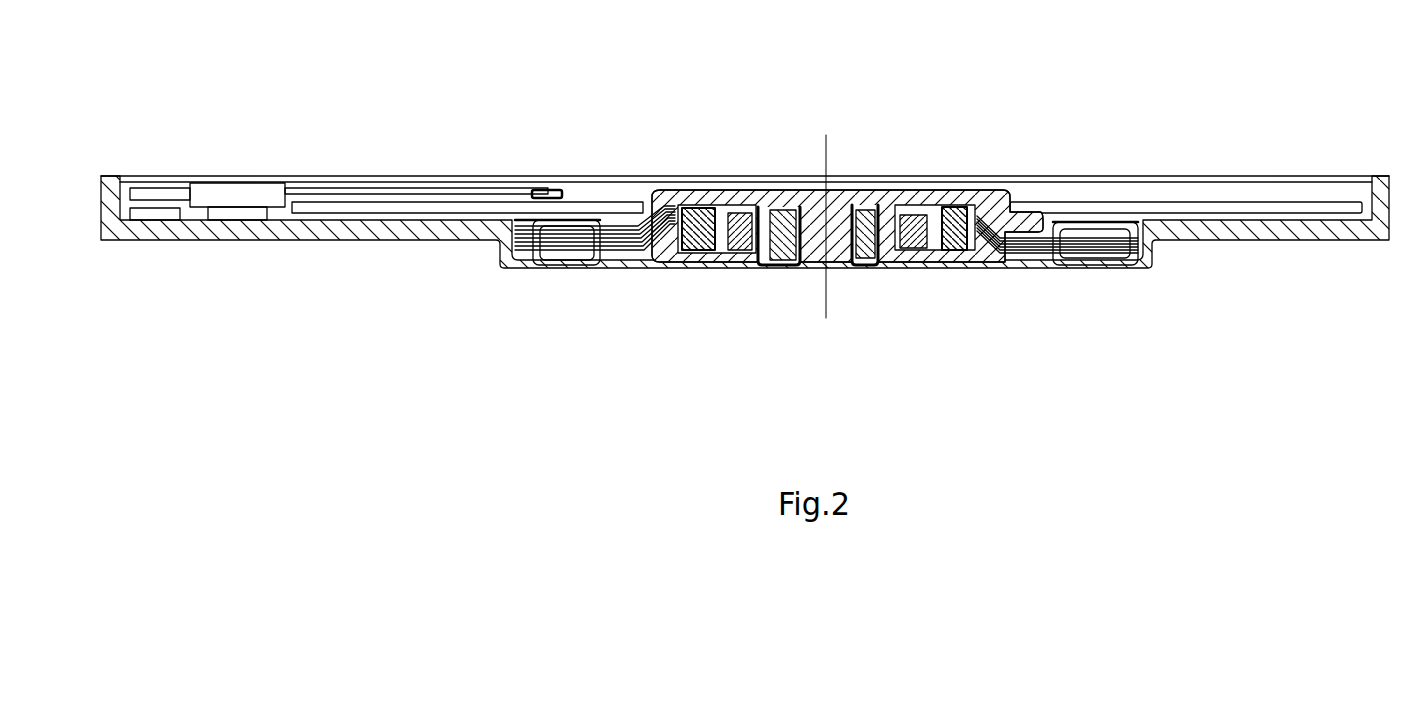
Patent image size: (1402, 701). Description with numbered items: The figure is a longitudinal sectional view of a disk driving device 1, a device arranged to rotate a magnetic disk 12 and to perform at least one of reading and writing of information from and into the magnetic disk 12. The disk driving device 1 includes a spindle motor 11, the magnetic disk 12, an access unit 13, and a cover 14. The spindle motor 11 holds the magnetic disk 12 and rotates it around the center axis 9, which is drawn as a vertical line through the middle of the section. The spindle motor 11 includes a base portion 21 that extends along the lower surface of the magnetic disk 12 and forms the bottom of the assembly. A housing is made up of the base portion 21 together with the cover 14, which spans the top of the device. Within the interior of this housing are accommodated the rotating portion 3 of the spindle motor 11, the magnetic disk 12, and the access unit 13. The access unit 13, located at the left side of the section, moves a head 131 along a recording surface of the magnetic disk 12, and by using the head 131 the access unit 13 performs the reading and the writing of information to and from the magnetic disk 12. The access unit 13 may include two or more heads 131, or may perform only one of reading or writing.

The disk driving device 1 is at (216, 131).
The rotating portion 3 is at (931, 198).
The center axis 9 is at (825, 150).
The spindle motor 11 is at (898, 284).
The magnetic disk 12 is at (1250, 207).
The access unit 13 is at (423, 186).
The head 131 is at (548, 188).
The cover 14 is at (1082, 178).
The base portion 21 is at (1200, 231).